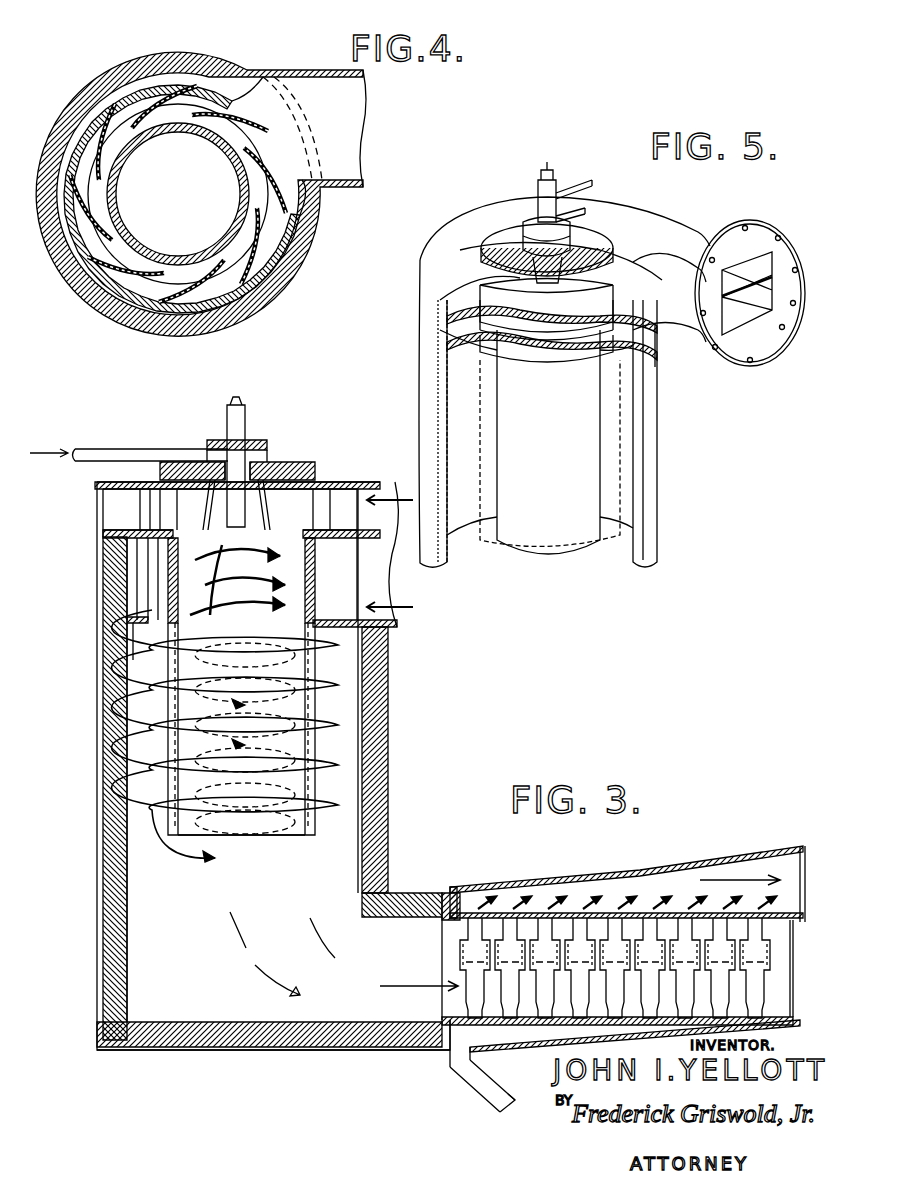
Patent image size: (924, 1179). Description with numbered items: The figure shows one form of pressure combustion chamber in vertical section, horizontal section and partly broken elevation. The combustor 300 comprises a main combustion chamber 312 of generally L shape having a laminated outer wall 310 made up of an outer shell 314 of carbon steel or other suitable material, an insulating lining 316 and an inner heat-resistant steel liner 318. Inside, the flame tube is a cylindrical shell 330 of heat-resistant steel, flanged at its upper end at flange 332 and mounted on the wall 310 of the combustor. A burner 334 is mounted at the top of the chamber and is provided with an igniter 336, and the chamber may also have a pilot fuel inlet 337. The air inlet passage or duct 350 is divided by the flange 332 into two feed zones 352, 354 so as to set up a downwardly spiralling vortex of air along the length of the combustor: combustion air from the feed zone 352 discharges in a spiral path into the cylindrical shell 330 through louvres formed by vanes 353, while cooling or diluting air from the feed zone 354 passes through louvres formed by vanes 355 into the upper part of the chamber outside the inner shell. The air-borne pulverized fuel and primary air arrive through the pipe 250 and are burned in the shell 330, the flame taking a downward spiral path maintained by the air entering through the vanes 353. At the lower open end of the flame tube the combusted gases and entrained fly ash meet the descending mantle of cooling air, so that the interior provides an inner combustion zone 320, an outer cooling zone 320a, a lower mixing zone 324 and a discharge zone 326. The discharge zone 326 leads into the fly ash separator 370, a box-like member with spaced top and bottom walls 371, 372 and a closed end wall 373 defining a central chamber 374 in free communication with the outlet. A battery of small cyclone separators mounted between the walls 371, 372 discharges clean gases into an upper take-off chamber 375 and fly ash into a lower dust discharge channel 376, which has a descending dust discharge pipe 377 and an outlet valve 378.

In FIG. 5, the pipe 250 is at (583, 218).
In FIG. 3, the pipe 250 is at (145, 437).
In FIG. 5, the combustor 300 is at (664, 480).
In FIG. 3, the combustor 300 is at (92, 782).
In FIG. 5, the laminated outer wall 310 is at (657, 540).
In FIG. 3, the laminated outer wall 310 is at (389, 703).
In FIG. 3, the main combustion chamber 312 is at (337, 848).
In FIG. 5, the outer shell 314 is at (440, 246).
In FIG. 3, the outer shell 314 is at (333, 480).
In FIG. 3, the insulating lining 316 is at (98, 963).
In FIG. 3, the inner heat-resistant steel liner 318 is at (127, 912).
In FIG. 3, the inner combustion zone 320 is at (292, 690).
In FIG. 5, the outer cooling zone 320a is at (625, 432).
In FIG. 3, the outer cooling zone 320a is at (327, 793).
In FIG. 3, the lower mixing zone 324 is at (228, 964).
In FIG. 3, the discharge zone 326 is at (436, 976).
In FIG. 4, the cylindrical shell 330 is at (242, 203).
In FIG. 5, the cylindrical shell 330 is at (543, 546).
In FIG. 3, the cylindrical shell 330 is at (318, 752).
In FIG. 5, the flange 332 is at (432, 312).
In FIG. 3, the flange 332 is at (99, 503).
In FIG. 5, the burner 334 is at (513, 230).
In FIG. 3, the burner 334 is at (250, 463).
In FIG. 5, the igniter 336 is at (553, 176).
In FIG. 3, the igniter 336 is at (237, 420).
In FIG. 5, the pilot fuel inlet 337 is at (578, 178).
In FIG. 4, the air inlet passage or duct 350 is at (365, 80).
In FIG. 3, the air inlet passage or duct 350 is at (363, 482).
In FIG. 5, the feed zone 352 is at (738, 262).
In FIG. 3, the feed zone 352 is at (332, 489).
In FIG. 4, the vanes 353 is at (245, 112).
In FIG. 5, the vanes 353 is at (535, 313).
In FIG. 3, the vanes 353 is at (172, 518).
In FIG. 5, the feed zone 354 is at (552, 346).
In FIG. 3, the feed zone 354 is at (332, 545).
In FIG. 5, the vanes 355 is at (546, 345).
In FIG. 3, the vanes 355 is at (136, 640).
In FIG. 3, the fly ash separator 370 is at (630, 862).
In FIG. 3, the top wall 371 is at (567, 915).
In FIG. 3, the bottom wall 372 is at (587, 1020).
In FIG. 3, the closed end wall 373 is at (793, 1000).
In FIG. 3, the central chamber 374 is at (533, 1008).
In FIG. 3, the upper take-off chamber 375 is at (720, 868).
In FIG. 3, the lower dust discharge channel 376 is at (634, 1027).
In FIG. 3, the dust discharge pipe 377 is at (475, 1083).
In FIG. 3, the outlet valve 378 is at (503, 1105).